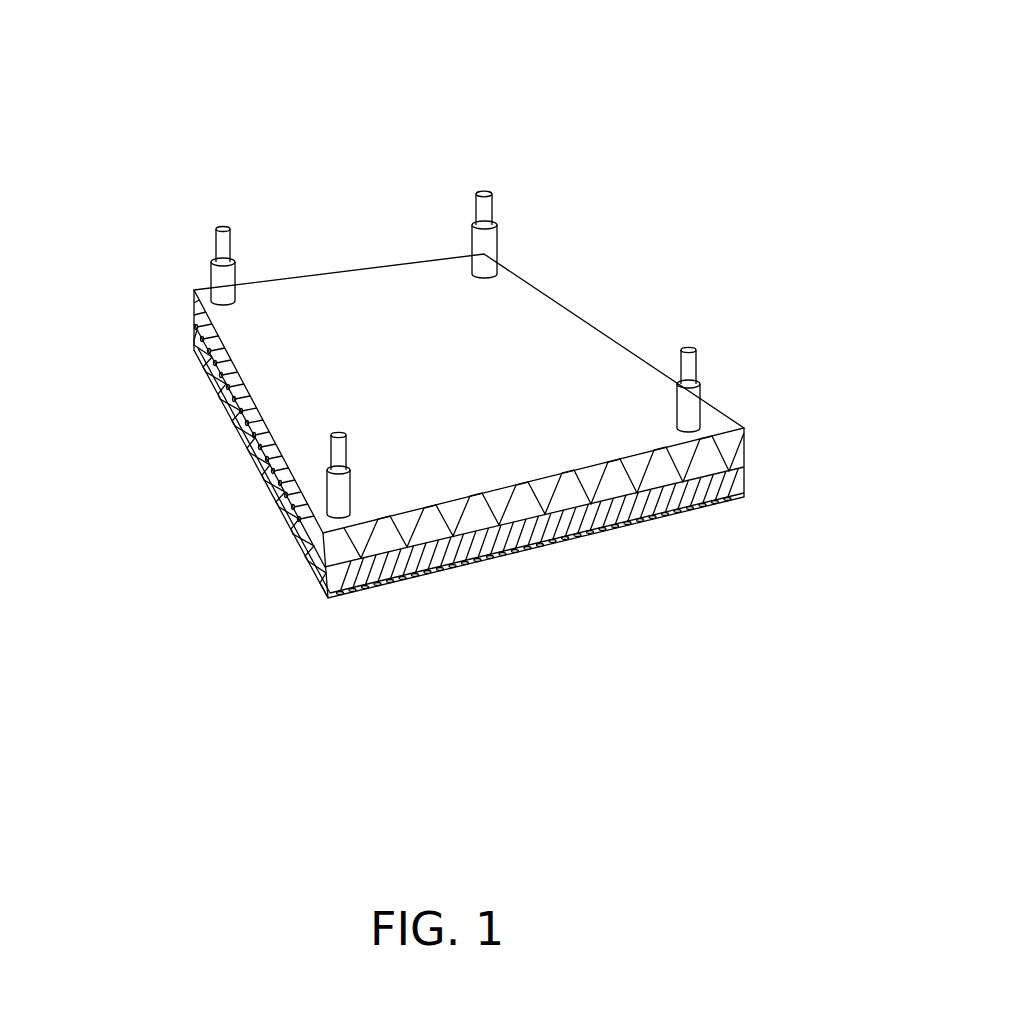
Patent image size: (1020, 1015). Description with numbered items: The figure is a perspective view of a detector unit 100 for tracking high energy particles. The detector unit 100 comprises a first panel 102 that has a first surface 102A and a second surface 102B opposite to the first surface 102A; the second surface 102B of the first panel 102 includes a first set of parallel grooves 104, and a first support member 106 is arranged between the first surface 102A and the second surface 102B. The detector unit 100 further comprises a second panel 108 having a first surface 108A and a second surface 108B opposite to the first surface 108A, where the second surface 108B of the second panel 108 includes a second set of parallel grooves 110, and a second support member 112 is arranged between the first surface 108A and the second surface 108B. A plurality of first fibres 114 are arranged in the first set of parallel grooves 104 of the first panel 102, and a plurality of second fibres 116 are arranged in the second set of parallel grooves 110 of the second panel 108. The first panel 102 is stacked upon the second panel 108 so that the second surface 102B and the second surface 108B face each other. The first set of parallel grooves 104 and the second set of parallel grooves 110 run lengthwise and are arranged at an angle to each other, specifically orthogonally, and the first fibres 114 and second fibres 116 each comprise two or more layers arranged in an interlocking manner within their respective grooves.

The detector unit 100 is at (728, 75).
The first panel 102 is at (650, 331).
The first surface of the first panel 102A is at (360, 283).
The second surface of the first panel 102B is at (668, 510).
The first set of parallel grooves 104 is at (200, 340).
The first support member 106 is at (425, 583).
The second panel 108 is at (196, 393).
The first surface of the second panel 108A is at (233, 430).
The second surface of the second panel 108B is at (273, 497).
The second set of parallel grooves 110 is at (363, 587).
The second support member 112 is at (300, 545).
The first fibres 114 is at (313, 583).
The second fibres 116 is at (531, 535).